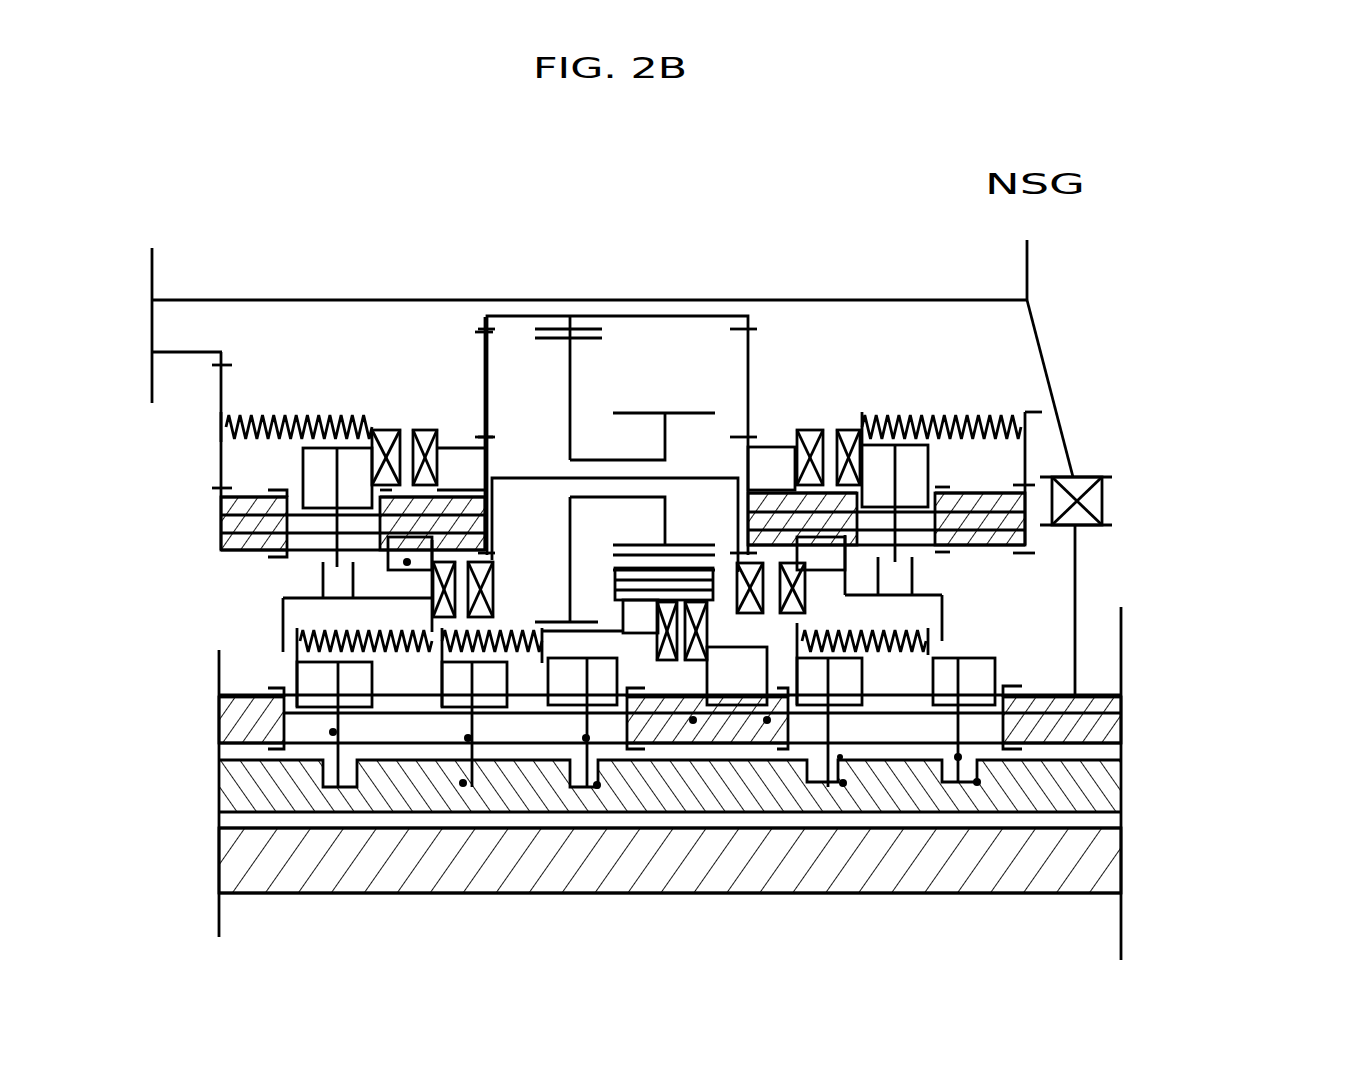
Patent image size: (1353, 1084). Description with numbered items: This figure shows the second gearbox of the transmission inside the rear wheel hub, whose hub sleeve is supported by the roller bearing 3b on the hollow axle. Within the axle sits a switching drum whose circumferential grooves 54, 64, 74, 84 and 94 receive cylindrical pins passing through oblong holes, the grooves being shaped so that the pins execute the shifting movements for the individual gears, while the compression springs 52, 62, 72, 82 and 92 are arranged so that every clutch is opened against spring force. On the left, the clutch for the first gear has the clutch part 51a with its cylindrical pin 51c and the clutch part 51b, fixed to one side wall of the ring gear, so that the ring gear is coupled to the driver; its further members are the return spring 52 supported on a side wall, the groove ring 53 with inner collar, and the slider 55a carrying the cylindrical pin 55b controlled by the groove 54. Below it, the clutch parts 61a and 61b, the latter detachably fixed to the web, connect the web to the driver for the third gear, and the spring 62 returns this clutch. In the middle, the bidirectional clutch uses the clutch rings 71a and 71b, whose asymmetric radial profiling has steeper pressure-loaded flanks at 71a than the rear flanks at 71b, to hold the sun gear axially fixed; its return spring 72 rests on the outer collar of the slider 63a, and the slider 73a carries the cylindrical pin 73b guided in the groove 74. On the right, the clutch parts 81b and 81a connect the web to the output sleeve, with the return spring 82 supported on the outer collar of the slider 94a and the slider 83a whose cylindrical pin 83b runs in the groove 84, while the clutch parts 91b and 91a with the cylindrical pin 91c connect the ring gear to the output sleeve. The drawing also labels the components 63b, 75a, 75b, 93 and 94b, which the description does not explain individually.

The return spring 52 is at (250, 420).
The clutch part 51a is at (385, 432).
The clutch part 51b is at (424, 432).
The cylindrical pin 51c is at (337, 558).
The clutch part 91b is at (805, 432).
The clutch part 91a is at (845, 432).
The compression spring 92 is at (950, 420).
The cylindrical pin 91c is at (898, 555).
The roller bearing 3b is at (1093, 497).
The fork 93 is at (942, 608).
The return spring 82 is at (915, 632).
The slider 83a is at (843, 683).
The slider 94a is at (980, 682).
The cylindrical pin 83b is at (840, 758).
The clutch member 94b is at (958, 757).
The groove ring 53 is at (282, 623).
The compression spring 62 is at (272, 642).
The slider 55a is at (311, 680).
The clutch member 55b is at (333, 732).
The circumferential groove 54 is at (320, 785).
The clutch part 61a is at (407, 562).
The clutch part 61b is at (488, 590).
The clutch part 81b is at (747, 603).
The clutch part 81a is at (788, 603).
The slider 63a is at (450, 688).
The clutch member 63b is at (468, 738).
The gear 64 is at (463, 783).
The return spring 72 is at (513, 648).
The slider 73a is at (565, 692).
The circumferential groove 74 is at (597, 785).
The cylindrical pin 73b is at (586, 738).
The clutch ring 71a is at (663, 657).
The clutch member 75a is at (693, 720).
The clutch ring 71b is at (703, 653).
The clutch member 75b is at (767, 720).
The circumferential groove 84 is at (843, 783).
The circumferential groove 94 is at (977, 782).